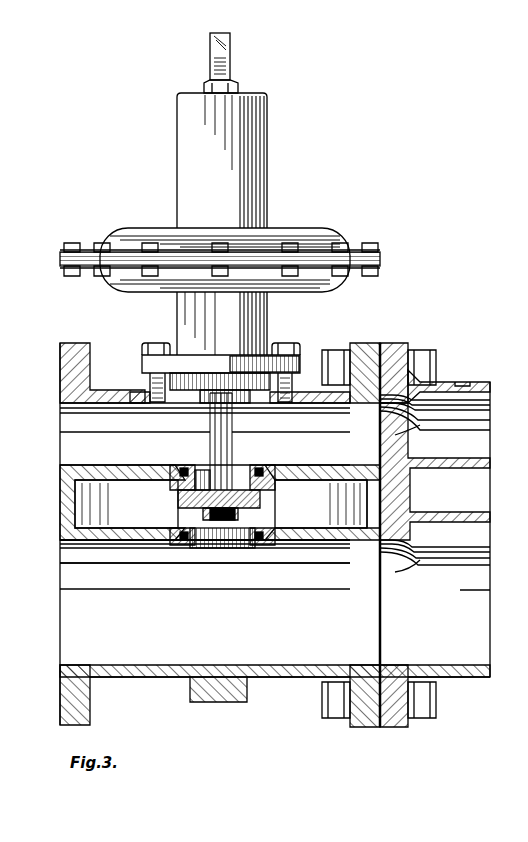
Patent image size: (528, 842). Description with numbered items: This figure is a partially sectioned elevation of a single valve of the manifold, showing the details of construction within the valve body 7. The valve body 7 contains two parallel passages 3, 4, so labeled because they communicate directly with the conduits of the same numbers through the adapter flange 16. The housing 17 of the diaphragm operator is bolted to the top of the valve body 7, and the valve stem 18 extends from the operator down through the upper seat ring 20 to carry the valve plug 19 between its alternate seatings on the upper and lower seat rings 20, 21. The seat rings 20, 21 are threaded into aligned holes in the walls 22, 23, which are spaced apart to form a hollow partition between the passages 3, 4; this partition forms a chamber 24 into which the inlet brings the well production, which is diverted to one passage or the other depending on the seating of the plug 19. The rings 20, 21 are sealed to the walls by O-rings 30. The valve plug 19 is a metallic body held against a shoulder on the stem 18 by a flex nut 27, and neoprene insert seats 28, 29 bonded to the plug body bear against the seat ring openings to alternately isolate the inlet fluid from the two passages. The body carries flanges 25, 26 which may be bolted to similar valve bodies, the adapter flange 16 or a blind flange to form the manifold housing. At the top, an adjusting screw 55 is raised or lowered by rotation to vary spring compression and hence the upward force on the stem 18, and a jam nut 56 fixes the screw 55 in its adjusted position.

The passage 3 is at (60, 610).
The passage 4 is at (220, 33).
The valve body 7 is at (272, 677).
The adapter flange 16 is at (390, 727).
The housing 17 is at (372, 172).
The valve stem 18 is at (233, 452).
The valve plug 19 is at (238, 513).
The upper seat ring 20 is at (270, 468).
The lower seat ring 21 is at (190, 545).
The wall 22 is at (330, 467).
The wall 23 is at (350, 540).
The chamber 24 is at (385, 507).
The flange 25 is at (350, 343).
The flange 26 is at (90, 343).
The flex nut 27 is at (245, 522).
The neoprene insert seat 28 is at (205, 470).
The neoprene insert seat 29 is at (178, 500).
The O-ring 30 is at (175, 470).
The adjusting screw 55 is at (235, 63).
The jam nut 56 is at (240, 85).